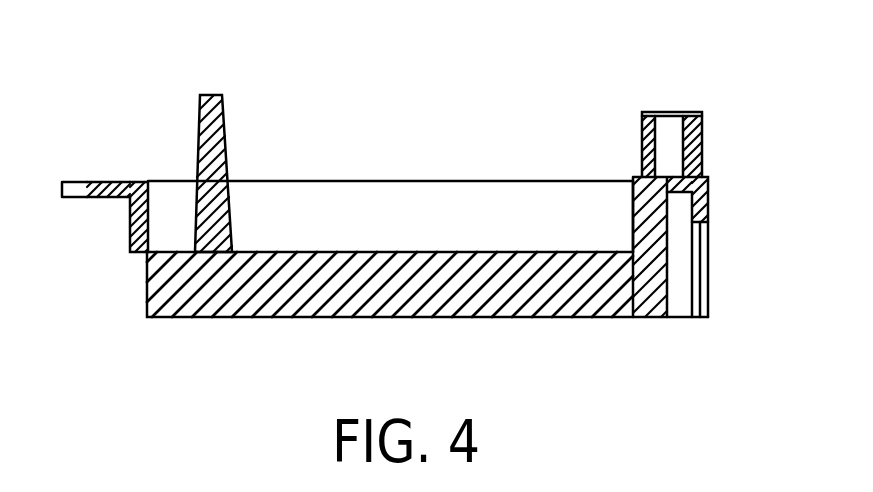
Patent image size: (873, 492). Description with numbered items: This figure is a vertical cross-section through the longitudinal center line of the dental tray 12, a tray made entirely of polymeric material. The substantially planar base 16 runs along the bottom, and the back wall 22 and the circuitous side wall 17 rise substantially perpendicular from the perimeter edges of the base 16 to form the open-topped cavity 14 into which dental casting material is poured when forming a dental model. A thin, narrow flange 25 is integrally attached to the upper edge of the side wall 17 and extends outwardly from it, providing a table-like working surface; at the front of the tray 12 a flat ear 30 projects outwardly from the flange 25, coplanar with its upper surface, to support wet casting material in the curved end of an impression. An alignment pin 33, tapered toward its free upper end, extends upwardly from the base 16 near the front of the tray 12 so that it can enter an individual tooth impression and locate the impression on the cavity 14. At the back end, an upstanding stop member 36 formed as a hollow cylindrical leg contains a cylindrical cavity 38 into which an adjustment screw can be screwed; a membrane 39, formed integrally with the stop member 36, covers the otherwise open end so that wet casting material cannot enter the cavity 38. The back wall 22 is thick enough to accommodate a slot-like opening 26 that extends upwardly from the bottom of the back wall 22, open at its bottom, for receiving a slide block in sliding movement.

The dental tray 12 is at (450, 166).
The cavity 14 is at (532, 220).
The planar base 16 is at (345, 250).
The circuitous side wall 17 is at (132, 218).
The back wall 22 is at (719, 199).
The flange 25 is at (108, 181).
The slot-like opening 26 is at (675, 255).
The ear 30 is at (63, 181).
The alignment pin 33 is at (222, 115).
The stop member 36 is at (698, 137).
The cylindrical cavity 38 is at (665, 150).
The membrane 39 is at (668, 111).